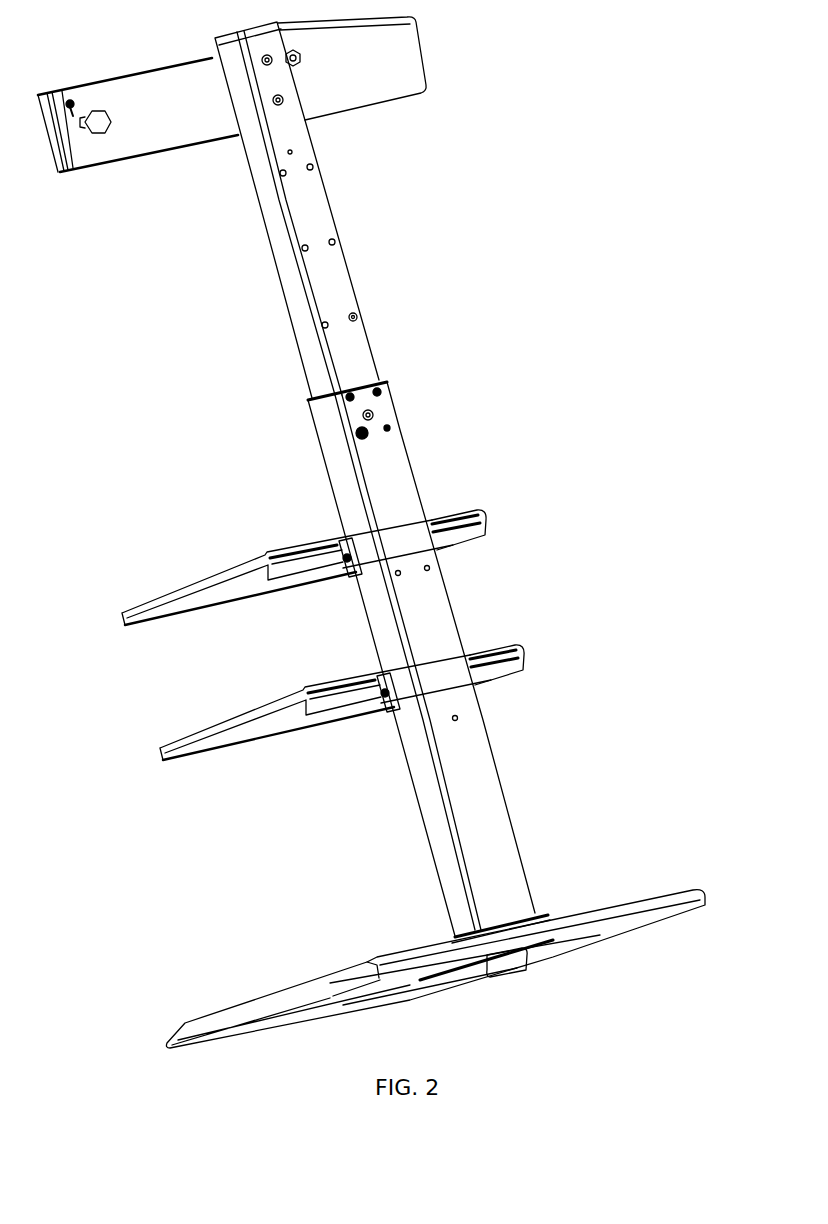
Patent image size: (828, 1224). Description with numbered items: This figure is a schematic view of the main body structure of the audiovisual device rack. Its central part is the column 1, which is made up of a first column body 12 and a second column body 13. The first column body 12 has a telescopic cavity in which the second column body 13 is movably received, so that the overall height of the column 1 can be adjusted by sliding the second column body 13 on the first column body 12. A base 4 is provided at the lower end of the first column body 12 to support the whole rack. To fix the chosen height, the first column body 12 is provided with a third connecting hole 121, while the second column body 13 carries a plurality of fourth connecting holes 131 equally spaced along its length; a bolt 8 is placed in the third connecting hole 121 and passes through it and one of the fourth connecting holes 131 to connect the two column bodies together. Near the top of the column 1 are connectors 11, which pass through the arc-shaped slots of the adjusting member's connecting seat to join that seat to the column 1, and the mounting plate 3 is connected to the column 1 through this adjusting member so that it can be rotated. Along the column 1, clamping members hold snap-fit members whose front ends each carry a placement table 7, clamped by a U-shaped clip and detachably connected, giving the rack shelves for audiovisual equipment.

The column 1 is at (313, 220).
The mounting plate 3 is at (173, 117).
The base 4 is at (393, 952).
The placement table 7 is at (193, 602).
The bolt 8 is at (358, 430).
The connector 11 is at (300, 60).
The first column body 12 is at (380, 483).
The second column body 13 is at (337, 290).
The third connecting hole 121 is at (398, 422).
The fourth connecting hole 131 is at (358, 315).